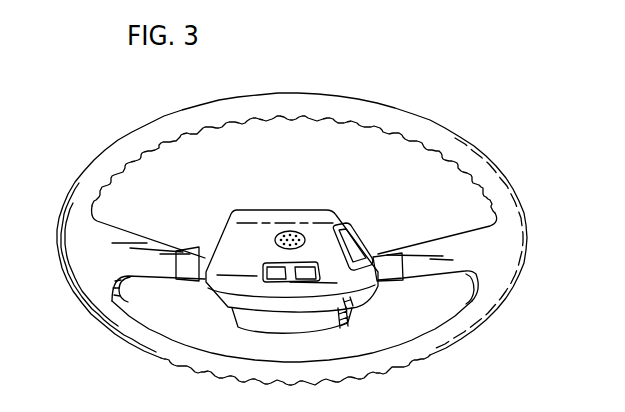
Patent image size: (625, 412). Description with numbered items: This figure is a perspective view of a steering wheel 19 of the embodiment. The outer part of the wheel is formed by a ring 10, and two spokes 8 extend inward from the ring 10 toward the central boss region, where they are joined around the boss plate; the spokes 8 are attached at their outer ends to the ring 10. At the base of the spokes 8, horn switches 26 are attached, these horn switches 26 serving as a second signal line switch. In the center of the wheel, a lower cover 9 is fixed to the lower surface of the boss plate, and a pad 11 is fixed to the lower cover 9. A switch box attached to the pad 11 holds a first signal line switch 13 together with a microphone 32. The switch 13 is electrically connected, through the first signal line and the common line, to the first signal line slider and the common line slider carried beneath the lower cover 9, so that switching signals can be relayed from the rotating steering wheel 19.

The ring 10 is at (393, 117).
The steering wheel 19 is at (458, 133).
The spokes 8 is at (438, 242).
The horn switches 26 is at (190, 252).
The pad 11 is at (308, 209).
The lower cover 9 is at (342, 324).
The microphone 32 is at (282, 232).
The first signal line switch 13 is at (357, 243).